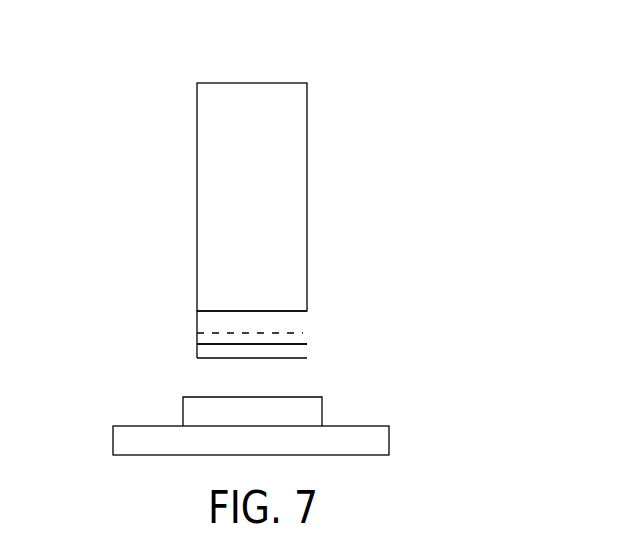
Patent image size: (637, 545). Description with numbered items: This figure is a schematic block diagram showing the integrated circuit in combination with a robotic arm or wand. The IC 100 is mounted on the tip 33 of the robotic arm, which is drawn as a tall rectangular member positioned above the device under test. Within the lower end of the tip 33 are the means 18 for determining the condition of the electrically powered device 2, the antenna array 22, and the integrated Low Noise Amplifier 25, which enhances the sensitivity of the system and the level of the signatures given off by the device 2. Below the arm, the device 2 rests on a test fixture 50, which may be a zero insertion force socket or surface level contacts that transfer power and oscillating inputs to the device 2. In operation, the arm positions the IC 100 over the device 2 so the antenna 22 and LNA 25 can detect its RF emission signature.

The tip 33 is at (278, 206).
The integrated Low Noise Amplifier (LNA) 25 is at (205, 338).
The means for determining condition 18 is at (281, 324).
The antenna array 22 is at (307, 350).
The integrated circuit (IC) 100 is at (176, 339).
The electrically powered device 2 is at (322, 411).
The test fixture 50 is at (389, 438).